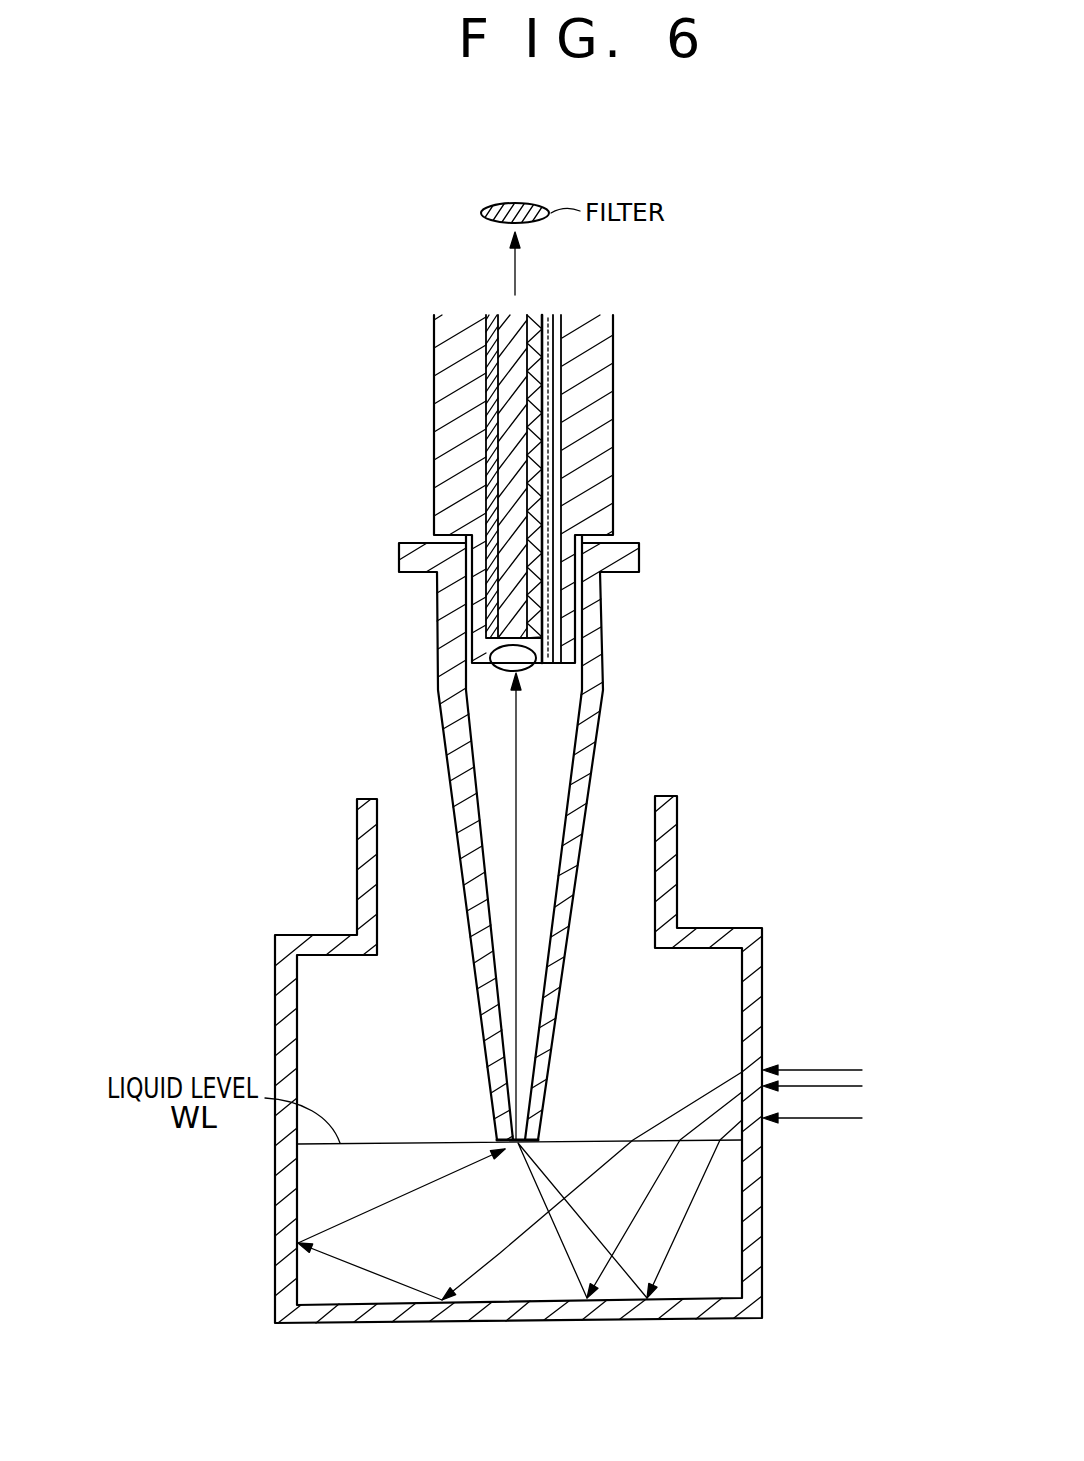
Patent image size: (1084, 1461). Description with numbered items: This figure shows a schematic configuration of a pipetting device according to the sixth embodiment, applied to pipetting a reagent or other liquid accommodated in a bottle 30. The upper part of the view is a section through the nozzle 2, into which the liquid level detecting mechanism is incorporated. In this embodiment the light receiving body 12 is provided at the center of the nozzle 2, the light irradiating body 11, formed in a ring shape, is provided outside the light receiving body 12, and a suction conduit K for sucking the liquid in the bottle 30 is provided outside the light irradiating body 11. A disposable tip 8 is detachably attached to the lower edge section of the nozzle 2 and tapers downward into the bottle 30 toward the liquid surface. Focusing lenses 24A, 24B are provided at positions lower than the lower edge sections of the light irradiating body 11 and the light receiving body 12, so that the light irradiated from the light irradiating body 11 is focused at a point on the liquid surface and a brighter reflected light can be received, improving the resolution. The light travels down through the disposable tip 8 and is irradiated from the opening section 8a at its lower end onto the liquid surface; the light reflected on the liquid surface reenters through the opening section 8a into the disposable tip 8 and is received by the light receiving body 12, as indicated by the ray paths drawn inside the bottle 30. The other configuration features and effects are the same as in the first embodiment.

The nozzle 2 is at (447, 447).
The disposable tip 8 is at (507, 880).
The opening section 8a is at (540, 1141).
The light irradiating body 11 is at (535, 483).
The light receiving body 12 is at (512, 359).
The focusing lens 24A is at (525, 665).
The focusing lens 24B is at (652, 685).
The bottle 30 is at (764, 945).
The suction conduit K is at (553, 385).